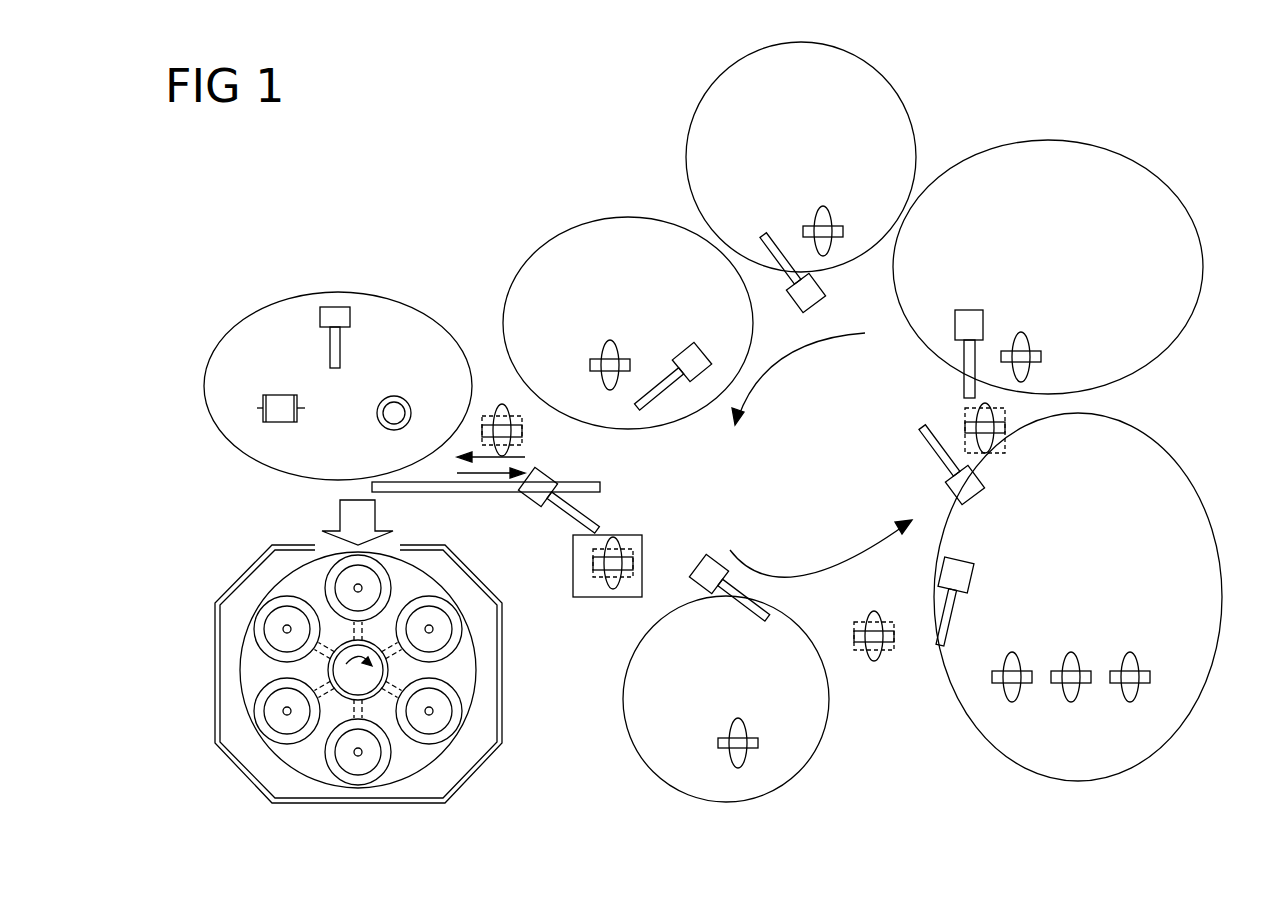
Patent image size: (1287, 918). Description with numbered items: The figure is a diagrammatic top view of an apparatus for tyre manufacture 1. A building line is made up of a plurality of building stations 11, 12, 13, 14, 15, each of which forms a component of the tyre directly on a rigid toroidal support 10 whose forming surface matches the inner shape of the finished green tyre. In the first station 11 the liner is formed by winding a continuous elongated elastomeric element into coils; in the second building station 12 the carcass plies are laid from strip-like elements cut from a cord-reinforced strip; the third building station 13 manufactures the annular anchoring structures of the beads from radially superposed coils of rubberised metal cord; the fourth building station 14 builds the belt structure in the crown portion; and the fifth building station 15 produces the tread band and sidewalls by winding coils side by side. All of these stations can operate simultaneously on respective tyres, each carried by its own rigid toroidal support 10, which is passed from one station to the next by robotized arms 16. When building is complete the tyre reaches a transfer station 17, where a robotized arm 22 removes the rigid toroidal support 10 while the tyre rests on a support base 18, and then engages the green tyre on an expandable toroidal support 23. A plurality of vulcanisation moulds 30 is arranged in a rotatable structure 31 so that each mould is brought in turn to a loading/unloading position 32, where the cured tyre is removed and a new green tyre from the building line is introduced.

The apparatus for tyre manufacture 1 is at (458, 196).
The rigid toroidal support 10 is at (610, 340).
The first station 11 is at (828, 725).
The second building station 12 is at (1190, 715).
The third building station 13 is at (1152, 170).
The fourth building station 14 is at (903, 92).
The fifth building station 15 is at (590, 222).
The robotized arms 16 is at (692, 352).
The transfer station 17 is at (232, 306).
The support base 18 is at (397, 397).
The robotized arm 22 is at (338, 315).
The expandable toroidal support 23 is at (283, 395).
The vulcanisation moulds 30 is at (340, 585).
The rotatable structure 31 is at (417, 763).
The loading/unloading position 32 is at (347, 514).